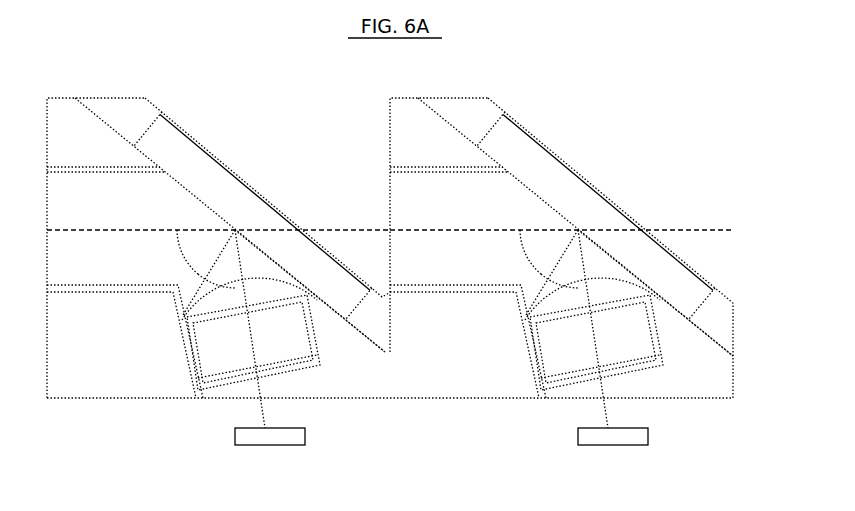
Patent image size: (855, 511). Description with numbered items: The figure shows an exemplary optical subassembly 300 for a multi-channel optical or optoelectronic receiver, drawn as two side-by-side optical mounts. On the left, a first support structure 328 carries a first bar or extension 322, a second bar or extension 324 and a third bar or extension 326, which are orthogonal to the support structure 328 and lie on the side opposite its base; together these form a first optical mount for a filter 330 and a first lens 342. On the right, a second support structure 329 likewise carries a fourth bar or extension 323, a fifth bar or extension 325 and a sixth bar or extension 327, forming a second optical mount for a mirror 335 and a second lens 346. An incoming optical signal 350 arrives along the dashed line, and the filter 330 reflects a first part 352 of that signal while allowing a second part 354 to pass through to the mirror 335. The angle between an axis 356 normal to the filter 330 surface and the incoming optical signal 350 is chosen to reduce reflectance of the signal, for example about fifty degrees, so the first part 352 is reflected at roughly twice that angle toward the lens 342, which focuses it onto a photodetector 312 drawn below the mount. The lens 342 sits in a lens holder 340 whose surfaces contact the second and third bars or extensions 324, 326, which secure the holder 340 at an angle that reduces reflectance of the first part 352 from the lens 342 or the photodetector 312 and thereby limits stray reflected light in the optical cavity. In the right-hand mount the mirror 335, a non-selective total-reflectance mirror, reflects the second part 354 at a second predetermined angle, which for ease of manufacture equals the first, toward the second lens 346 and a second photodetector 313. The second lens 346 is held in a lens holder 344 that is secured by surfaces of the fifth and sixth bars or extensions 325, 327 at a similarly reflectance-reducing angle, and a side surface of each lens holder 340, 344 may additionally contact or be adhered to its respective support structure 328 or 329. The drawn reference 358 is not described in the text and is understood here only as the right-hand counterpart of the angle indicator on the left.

The optical subassembly 300 is at (309, 68).
The photodetector 312 is at (308, 447).
The second photodetector 313 is at (637, 460).
The first bar or extension 322 is at (58, 122).
The fourth bar or extension 323 is at (567, 211).
The second bar or extension 324 is at (347, 373).
The fifth bar or extension 325 is at (564, 267).
The third bar or extension 326 is at (91, 348).
The sixth bar or extension 327 is at (468, 341).
The first support structure 328 is at (81, 212).
The second support structure 329 is at (449, 189).
The filter 330 is at (220, 185).
The mirror 335 is at (608, 203).
The lens holder 340 is at (225, 362).
The first lens 342 is at (320, 249).
The lens holder 344 is at (579, 339).
The second lens 346 is at (655, 290).
The incoming optical signal 350 is at (135, 228).
The first part of the incoming optical signal 352 is at (265, 408).
The second part of the incoming optical signal 354 is at (561, 216).
The axis normal to the surface of the filter 356 is at (187, 267).
The angle indicator 358 is at (521, 272).